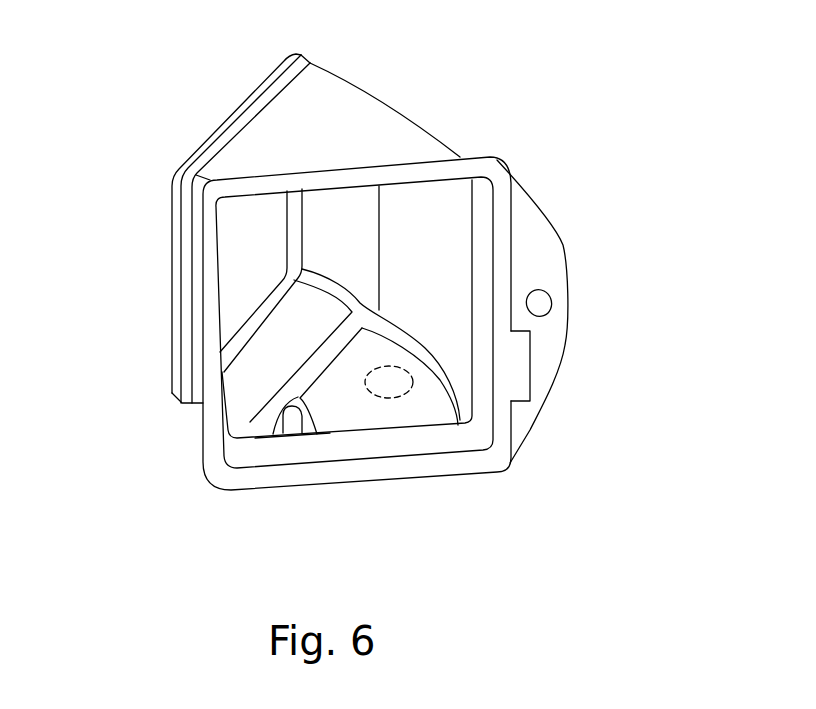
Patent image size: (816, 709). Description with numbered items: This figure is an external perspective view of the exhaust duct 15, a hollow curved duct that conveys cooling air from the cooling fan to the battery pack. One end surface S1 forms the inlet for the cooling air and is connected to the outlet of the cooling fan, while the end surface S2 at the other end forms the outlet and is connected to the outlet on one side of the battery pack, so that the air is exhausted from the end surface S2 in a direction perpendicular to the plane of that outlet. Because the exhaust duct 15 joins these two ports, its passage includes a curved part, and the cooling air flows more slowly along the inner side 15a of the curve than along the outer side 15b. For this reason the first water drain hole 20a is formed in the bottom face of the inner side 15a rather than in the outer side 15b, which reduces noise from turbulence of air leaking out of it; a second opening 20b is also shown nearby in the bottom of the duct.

The exhaust duct 15 is at (367, 123).
The inner side of the curved part 15a is at (287, 440).
The outer side of the curved part 15b is at (418, 365).
The first water drain hole 20a is at (297, 433).
The second engagement portion (boss) 20b is at (395, 385).
The end surface S1 is at (172, 180).
The end surface S2 is at (503, 437).